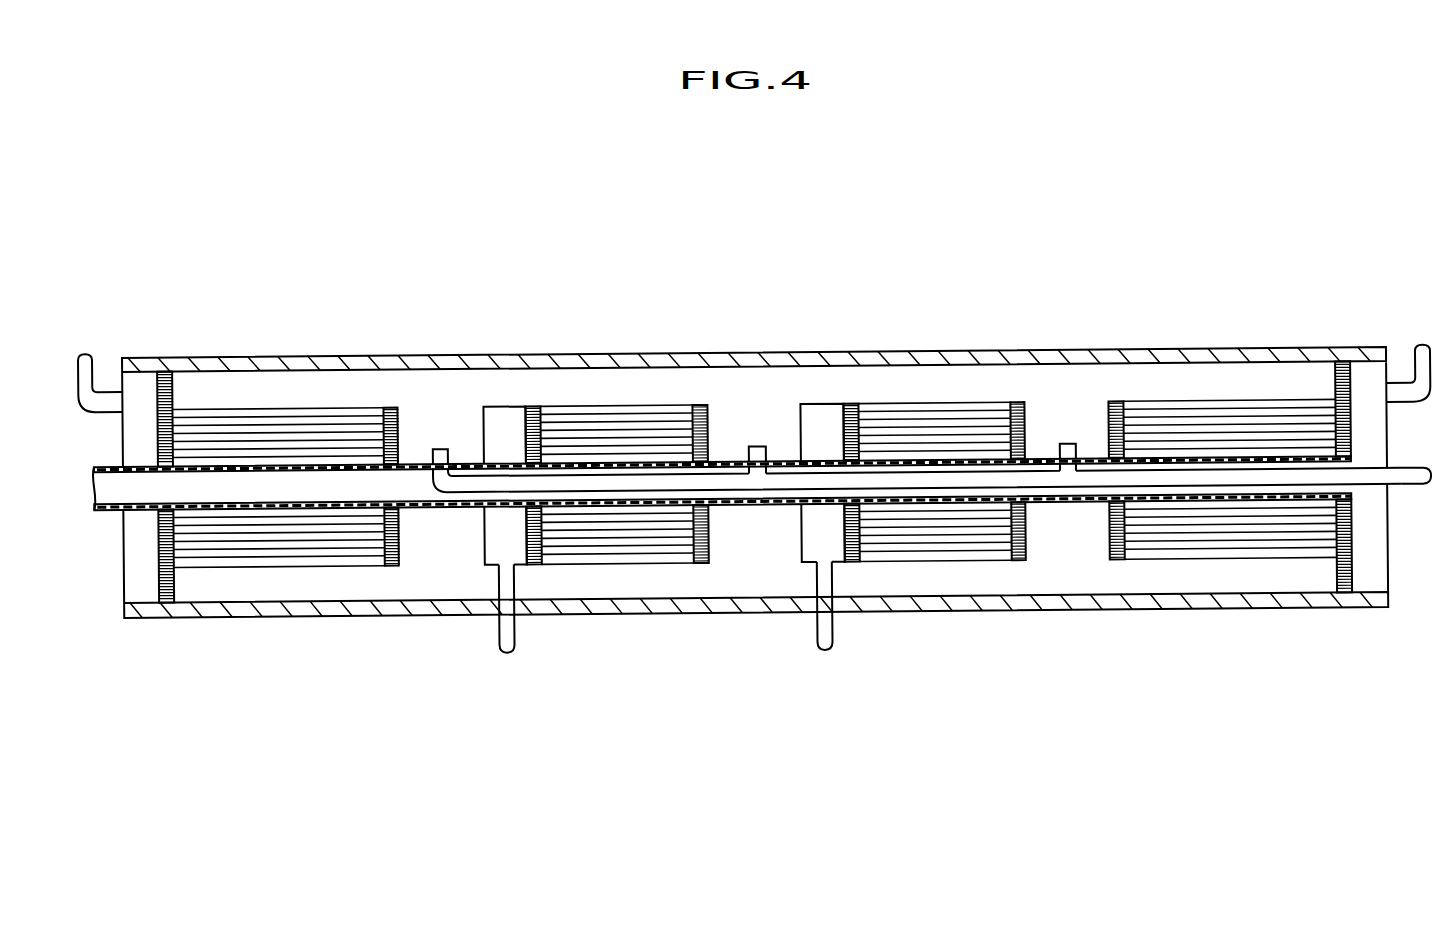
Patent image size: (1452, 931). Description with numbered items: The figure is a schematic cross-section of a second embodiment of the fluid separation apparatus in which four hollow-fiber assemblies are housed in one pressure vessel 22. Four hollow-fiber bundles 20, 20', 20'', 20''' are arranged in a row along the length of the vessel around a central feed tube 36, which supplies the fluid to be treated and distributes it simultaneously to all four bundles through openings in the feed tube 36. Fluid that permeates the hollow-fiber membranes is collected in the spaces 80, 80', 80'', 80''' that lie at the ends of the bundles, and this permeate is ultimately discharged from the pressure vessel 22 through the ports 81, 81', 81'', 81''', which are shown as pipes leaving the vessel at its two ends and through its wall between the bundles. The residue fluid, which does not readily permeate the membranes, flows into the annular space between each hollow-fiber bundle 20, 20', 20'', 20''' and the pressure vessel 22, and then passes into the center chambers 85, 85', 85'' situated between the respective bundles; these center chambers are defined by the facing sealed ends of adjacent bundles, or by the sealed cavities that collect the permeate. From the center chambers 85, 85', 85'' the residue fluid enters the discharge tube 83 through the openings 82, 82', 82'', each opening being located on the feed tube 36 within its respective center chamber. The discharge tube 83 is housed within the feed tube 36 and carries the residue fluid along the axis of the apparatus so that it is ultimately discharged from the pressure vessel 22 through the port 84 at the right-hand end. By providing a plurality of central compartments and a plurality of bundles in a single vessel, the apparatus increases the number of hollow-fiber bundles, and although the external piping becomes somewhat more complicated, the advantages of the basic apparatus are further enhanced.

The hollow-fiber bundle 20 is at (286, 440).
The hollow-fiber bundle 20' is at (627, 436).
The hollow-fiber bundle 20'' is at (945, 433).
The hollow-fiber bundle 20''' is at (1222, 431).
The pressure vessel 22 is at (565, 359).
The feed tube 36 is at (110, 513).
The permeate space 80 is at (122, 536).
The permeate space 80' is at (453, 534).
The permeate space 80'' is at (772, 534).
The permeate space 80''' is at (1335, 521).
The port 81 is at (79, 365).
The port 81' is at (473, 637).
The port 81'' is at (797, 636).
The port 81''' is at (1397, 344).
The opening 82 is at (477, 389).
The opening 82' is at (795, 385).
The opening 82'' is at (1119, 381).
The discharge tube 83 is at (1050, 500).
The port 84 is at (1401, 498).
The center chamber 85 is at (413, 345).
The center chamber 85' is at (723, 344).
The center chamber 85'' is at (1044, 340).